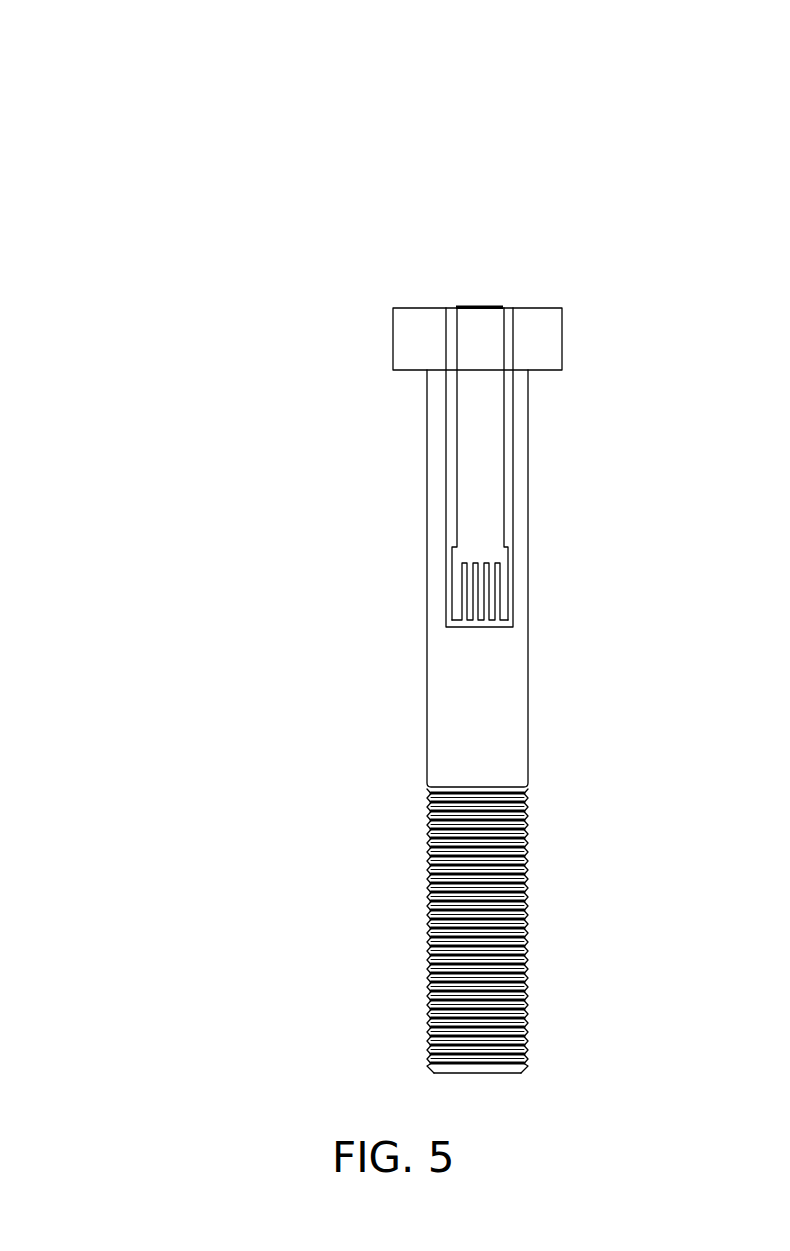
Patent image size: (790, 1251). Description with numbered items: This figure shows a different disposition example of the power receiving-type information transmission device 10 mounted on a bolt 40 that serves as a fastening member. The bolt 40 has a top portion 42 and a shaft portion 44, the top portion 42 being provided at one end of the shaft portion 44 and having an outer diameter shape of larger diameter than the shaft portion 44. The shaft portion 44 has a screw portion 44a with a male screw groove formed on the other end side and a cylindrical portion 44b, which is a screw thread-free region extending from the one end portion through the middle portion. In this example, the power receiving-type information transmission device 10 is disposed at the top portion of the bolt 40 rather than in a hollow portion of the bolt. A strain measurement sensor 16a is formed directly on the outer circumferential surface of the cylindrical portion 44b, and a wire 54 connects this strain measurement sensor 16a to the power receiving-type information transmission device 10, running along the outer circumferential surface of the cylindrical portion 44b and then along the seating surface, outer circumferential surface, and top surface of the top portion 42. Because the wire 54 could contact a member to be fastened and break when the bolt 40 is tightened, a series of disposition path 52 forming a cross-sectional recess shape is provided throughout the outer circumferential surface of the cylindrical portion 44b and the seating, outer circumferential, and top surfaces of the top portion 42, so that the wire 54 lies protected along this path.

The bolt 40 is at (386, 237).
The top portion 42 is at (408, 340).
The shaft portion 44 is at (183, 677).
The screw portion 44a is at (430, 829).
The cylindrical portion 44b is at (456, 668).
The power receiving-type information transmission device 10 is at (481, 306).
The disposition path 52 is at (451, 399).
The wire 54 is at (456, 461).
The strain measurement sensor 16a is at (500, 597).